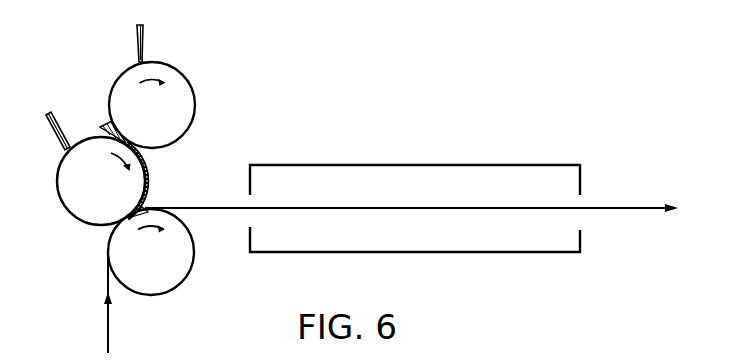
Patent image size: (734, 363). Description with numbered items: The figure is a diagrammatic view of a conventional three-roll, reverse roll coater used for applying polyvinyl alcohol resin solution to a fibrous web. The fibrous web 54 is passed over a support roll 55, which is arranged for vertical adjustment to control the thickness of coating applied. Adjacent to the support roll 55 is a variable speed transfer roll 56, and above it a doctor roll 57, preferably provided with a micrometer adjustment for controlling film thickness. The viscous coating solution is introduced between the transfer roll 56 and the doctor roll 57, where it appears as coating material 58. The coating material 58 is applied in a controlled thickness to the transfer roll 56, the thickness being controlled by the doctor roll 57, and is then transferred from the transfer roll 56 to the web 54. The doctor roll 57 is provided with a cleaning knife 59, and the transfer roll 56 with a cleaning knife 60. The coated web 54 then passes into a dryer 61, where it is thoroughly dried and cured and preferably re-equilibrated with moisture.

The fibrous web 54 is at (109, 343).
The support roll 55 is at (158, 290).
The transfer roll 56 is at (82, 218).
The doctor roll 57 is at (155, 117).
The coating material 58 is at (108, 127).
The cleaning knife 59 is at (137, 31).
The cleaning knife 60 is at (55, 139).
The dryer 61 is at (293, 255).